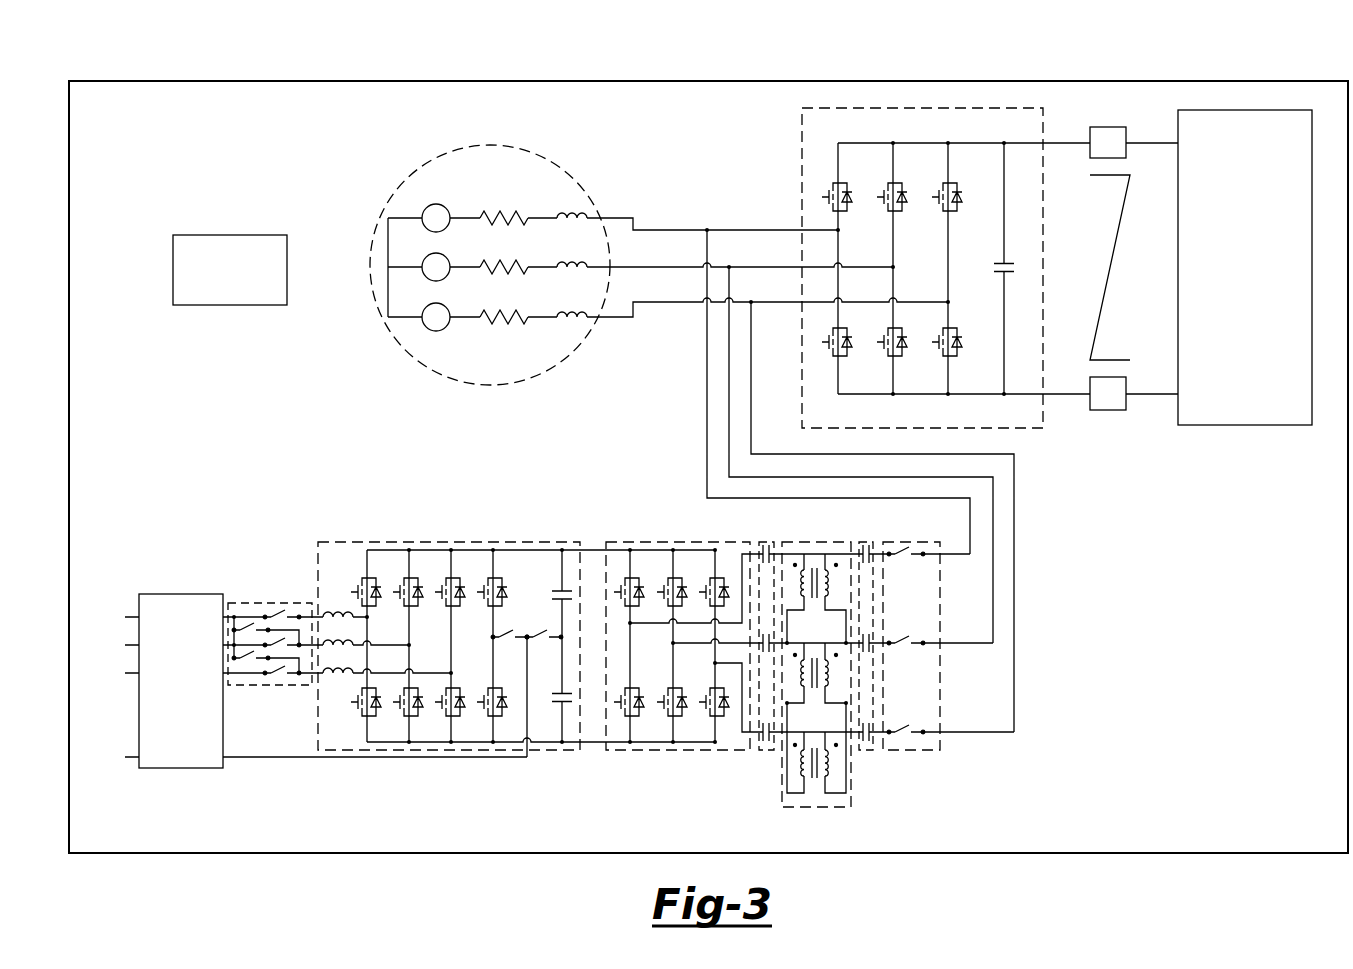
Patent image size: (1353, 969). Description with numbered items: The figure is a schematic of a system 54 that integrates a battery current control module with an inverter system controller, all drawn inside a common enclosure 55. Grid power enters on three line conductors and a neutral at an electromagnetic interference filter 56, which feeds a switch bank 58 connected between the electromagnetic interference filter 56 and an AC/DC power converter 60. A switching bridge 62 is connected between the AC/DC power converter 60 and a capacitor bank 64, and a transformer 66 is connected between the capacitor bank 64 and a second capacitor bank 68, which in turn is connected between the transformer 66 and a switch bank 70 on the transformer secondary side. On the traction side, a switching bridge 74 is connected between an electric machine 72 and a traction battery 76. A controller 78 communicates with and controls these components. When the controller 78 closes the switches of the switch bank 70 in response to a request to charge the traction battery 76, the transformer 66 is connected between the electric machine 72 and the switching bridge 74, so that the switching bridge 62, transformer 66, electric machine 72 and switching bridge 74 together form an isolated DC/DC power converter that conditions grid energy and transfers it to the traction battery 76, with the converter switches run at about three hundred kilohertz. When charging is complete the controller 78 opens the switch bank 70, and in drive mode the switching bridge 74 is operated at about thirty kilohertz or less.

The system 54 is at (158, 152).
The integrated charger housing 55 is at (710, 81).
The electromagnetic interference filter 56 is at (182, 594).
The switch bank 58 is at (274, 603).
The AC/DC power converter 60 is at (448, 542).
The switching bridge 62 is at (676, 542).
The capacitor bank 64 is at (766, 752).
The transformer 66 is at (820, 807).
The capacitor bank 68 is at (862, 752).
The switch bank 70 is at (905, 752).
The electric machine 72 is at (490, 386).
The switching bridge 74 is at (802, 148).
The traction battery 76 is at (1245, 425).
The controller 78 is at (230, 235).